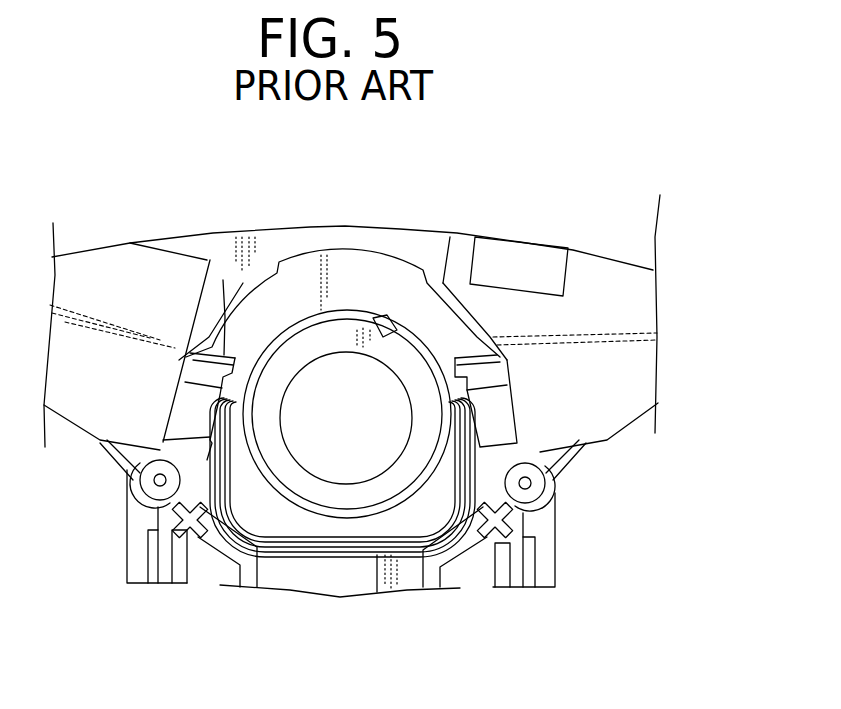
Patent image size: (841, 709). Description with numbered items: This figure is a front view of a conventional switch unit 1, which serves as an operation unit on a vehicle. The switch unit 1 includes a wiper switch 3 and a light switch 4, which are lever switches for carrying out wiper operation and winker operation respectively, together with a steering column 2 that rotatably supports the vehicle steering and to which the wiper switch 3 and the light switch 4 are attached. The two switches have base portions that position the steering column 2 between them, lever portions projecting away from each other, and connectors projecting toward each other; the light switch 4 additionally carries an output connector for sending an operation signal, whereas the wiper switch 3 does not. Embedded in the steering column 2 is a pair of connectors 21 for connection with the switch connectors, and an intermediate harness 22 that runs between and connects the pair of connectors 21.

The switch unit 1 is at (537, 198).
The steering column 2 is at (370, 290).
The wiper switch 3 is at (85, 277).
The light switch 4 is at (620, 287).
The connectors 21 is at (207, 372).
The intermediate harness 22 is at (347, 540).